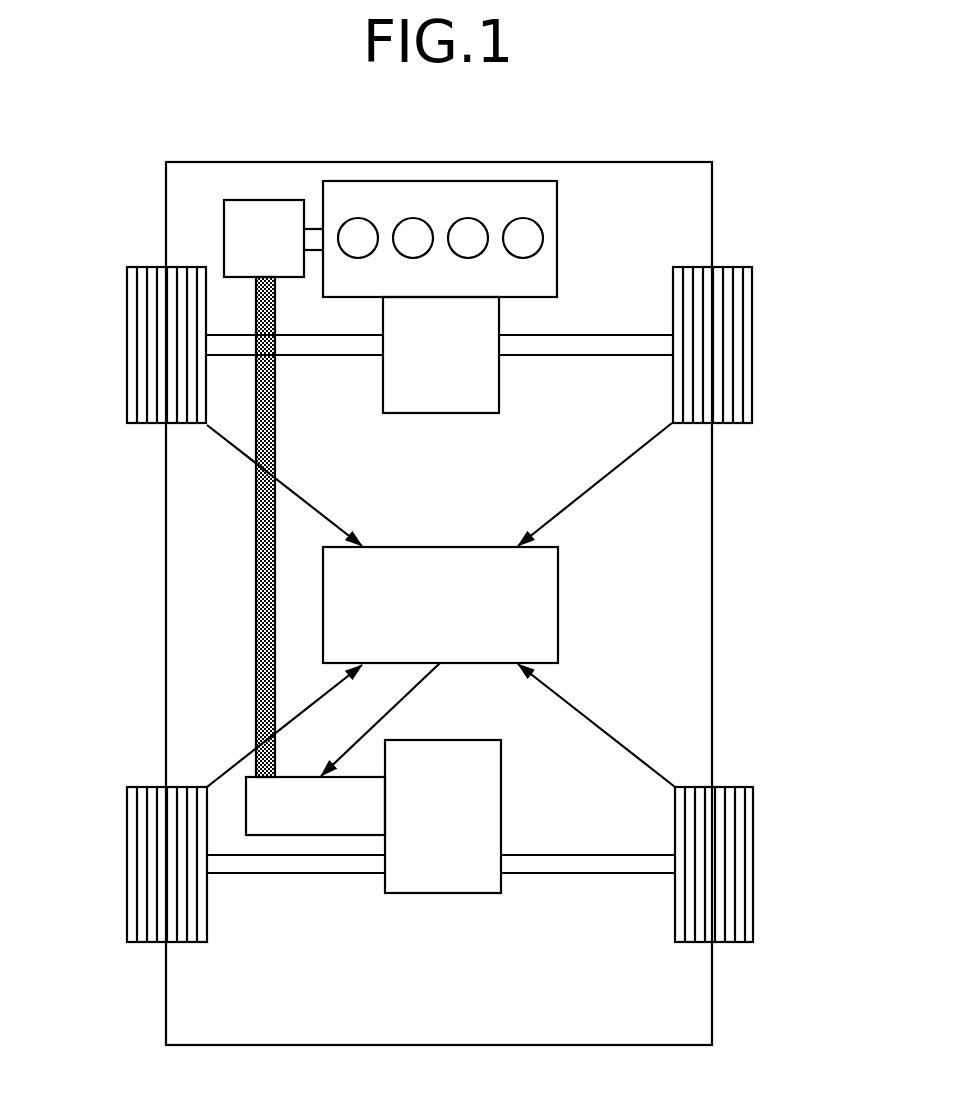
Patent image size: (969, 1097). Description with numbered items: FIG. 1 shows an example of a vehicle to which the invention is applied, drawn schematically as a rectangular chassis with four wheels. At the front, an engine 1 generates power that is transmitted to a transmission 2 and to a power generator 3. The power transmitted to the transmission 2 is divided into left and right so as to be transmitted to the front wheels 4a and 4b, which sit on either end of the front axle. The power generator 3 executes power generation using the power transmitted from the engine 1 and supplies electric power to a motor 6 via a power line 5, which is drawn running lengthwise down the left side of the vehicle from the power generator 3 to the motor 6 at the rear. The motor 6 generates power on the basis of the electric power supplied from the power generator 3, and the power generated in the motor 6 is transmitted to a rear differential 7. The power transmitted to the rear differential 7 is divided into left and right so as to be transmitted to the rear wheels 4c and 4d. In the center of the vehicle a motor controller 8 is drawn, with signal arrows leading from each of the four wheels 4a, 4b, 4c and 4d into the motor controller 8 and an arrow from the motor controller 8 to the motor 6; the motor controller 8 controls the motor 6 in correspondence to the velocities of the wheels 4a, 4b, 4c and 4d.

The engine 1 is at (557, 233).
The transmission 2 is at (443, 413).
The power generator 3 is at (263, 200).
The front wheel 4a is at (127, 345).
The front wheel 4b is at (752, 344).
The rear wheel 4c is at (127, 864).
The rear wheel 4d is at (753, 864).
The power line 5 is at (256, 530).
The motor 6 is at (318, 835).
The rear differential 7 is at (501, 788).
The motor controller 8 is at (558, 602).